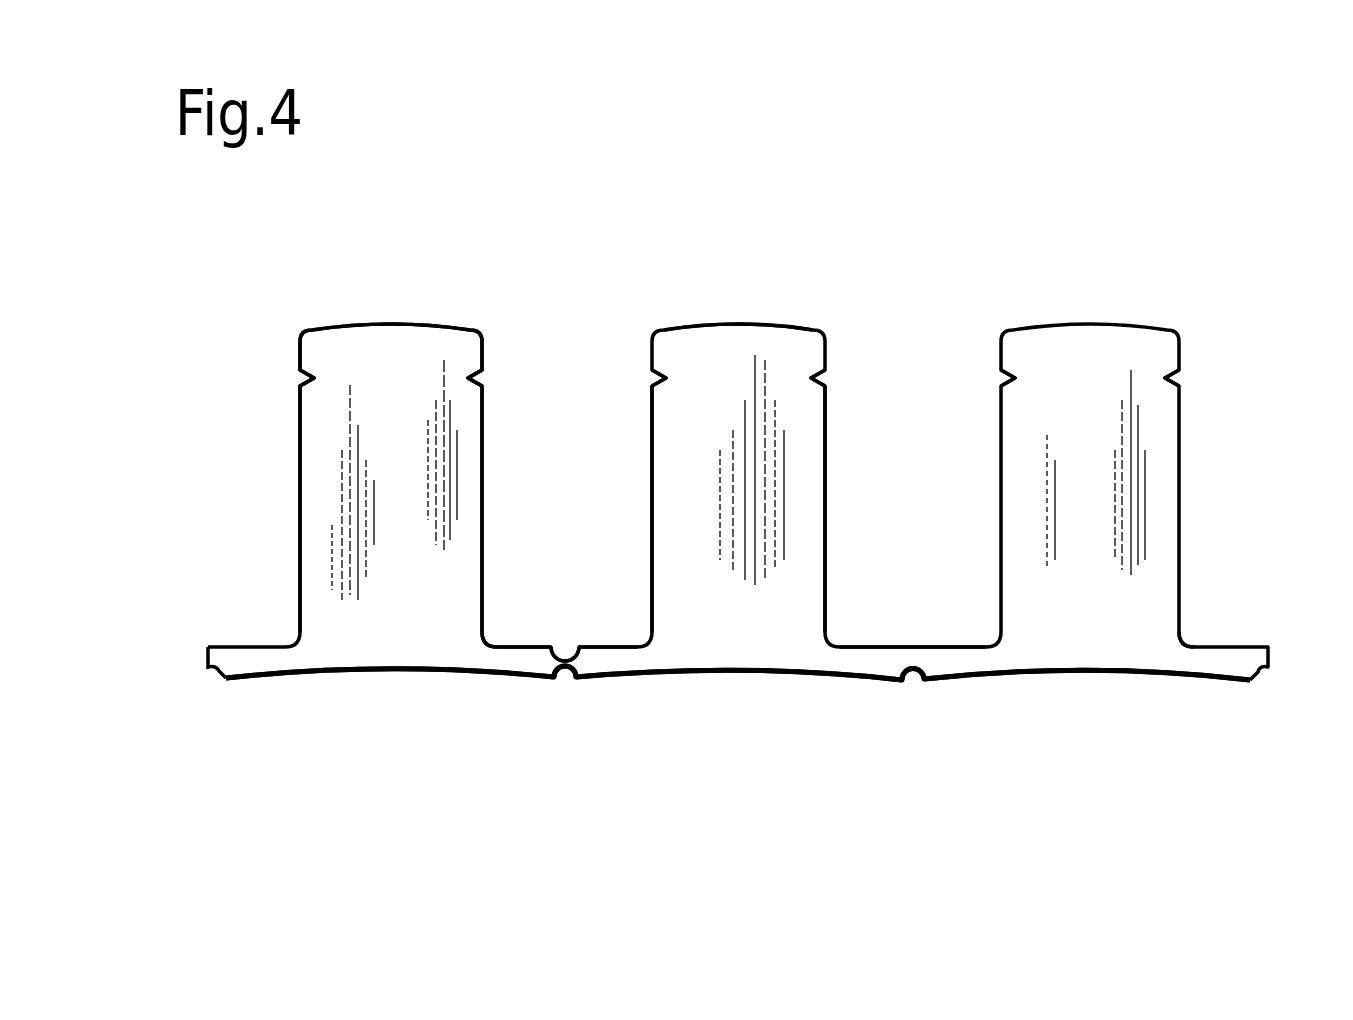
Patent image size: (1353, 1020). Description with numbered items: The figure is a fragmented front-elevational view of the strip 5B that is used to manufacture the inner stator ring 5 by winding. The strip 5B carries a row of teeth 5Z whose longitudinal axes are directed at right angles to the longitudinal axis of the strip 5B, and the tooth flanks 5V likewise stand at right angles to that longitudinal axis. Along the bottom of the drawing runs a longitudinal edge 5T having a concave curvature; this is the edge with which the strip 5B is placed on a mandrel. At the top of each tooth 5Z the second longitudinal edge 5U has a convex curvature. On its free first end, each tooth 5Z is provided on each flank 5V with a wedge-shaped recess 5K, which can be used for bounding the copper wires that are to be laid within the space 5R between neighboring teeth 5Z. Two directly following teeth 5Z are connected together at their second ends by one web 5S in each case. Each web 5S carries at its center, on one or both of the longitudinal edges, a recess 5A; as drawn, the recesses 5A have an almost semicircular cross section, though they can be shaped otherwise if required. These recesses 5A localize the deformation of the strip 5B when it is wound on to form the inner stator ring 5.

The inner stator ring 5 is at (563, 793).
The recess 5A is at (566, 648).
The strip 5B is at (1215, 522).
The wedge-shaped recess 5K is at (306, 377).
The space 5R is at (512, 590).
The web 5S is at (523, 663).
The longitudinal edge 5T is at (340, 673).
The second longitudinal edge 5U is at (752, 324).
The tooth flank 5V is at (650, 502).
The tooth 5Z is at (365, 350).